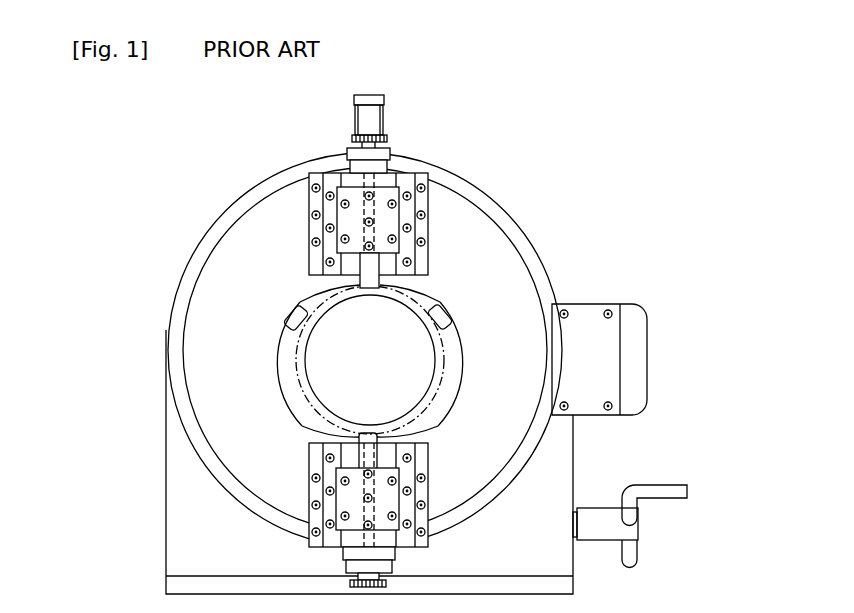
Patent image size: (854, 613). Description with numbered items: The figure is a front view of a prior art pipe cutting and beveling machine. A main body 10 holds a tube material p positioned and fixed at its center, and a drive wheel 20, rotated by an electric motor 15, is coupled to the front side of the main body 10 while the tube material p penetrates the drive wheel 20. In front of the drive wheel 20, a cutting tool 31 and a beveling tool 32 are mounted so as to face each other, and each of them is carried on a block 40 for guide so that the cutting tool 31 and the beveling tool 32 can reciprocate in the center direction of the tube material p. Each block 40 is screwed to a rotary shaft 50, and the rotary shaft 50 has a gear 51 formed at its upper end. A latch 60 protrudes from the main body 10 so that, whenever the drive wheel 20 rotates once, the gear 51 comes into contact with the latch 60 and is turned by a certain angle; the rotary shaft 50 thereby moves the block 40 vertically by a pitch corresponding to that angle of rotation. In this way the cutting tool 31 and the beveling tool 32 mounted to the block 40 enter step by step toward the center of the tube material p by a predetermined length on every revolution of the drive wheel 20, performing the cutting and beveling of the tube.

The main body 10 is at (178, 538).
The electric motor 15 is at (613, 350).
The drive wheel 20 is at (245, 253).
The cutting tool 31 is at (298, 300).
The beveling tool 32 is at (302, 426).
The block 40 is at (395, 215).
The rotary shaft 50 is at (363, 185).
The gear 51 is at (387, 138).
The latch 60 is at (363, 122).
The tube material p is at (440, 355).